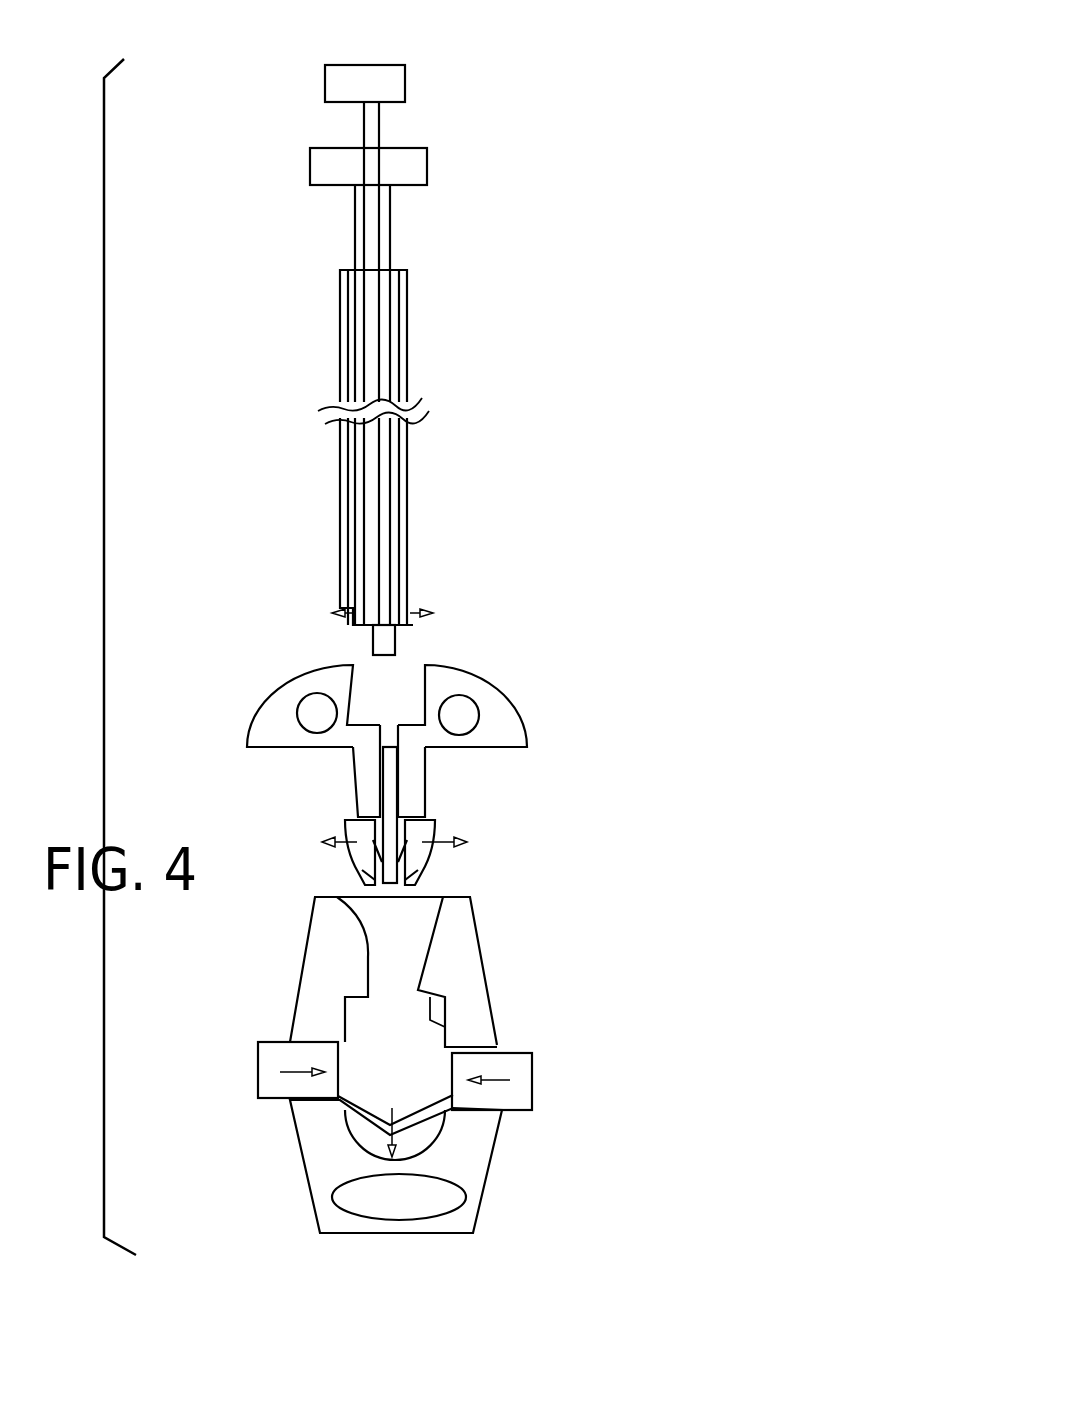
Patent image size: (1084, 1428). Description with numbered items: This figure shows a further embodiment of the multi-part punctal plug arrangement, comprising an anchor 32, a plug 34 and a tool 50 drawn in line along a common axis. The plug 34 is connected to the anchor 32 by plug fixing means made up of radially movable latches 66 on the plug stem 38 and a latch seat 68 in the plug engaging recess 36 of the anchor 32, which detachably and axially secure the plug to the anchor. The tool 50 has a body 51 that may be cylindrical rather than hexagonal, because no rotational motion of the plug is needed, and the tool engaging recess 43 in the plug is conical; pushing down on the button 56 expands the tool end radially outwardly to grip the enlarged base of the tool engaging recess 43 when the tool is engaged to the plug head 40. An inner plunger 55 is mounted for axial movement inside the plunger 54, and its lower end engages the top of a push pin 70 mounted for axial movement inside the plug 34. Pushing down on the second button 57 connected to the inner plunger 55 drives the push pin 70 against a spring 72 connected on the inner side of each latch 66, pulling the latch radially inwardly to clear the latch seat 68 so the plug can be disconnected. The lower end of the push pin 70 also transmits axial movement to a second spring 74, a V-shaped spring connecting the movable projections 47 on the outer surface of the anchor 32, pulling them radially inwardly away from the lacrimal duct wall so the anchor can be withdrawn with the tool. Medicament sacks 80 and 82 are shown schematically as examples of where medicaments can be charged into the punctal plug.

The anchor 32 is at (750, 1040).
The plug 34 is at (690, 676).
The plug engaging recess 36 is at (403, 965).
The plug stem 38 is at (423, 793).
The plug head 40 is at (293, 700).
The tool engaging recess 43 is at (407, 675).
The movable projections 47 is at (513, 1100).
The tool 50 is at (620, 450).
The body of the tool 51 is at (408, 523).
The plunger 54 is at (387, 250).
The inner plunger 55 is at (380, 357).
The button 56 is at (415, 165).
The second button 57 is at (390, 85).
The radially movable latches 66 is at (427, 853).
The latch seat 68 is at (430, 1020).
The push pin 70 is at (397, 775).
The spring 72 is at (397, 857).
The second spring 74 is at (420, 1120).
The medicament sack 80 is at (420, 1205).
The medicament sack 82 is at (480, 712).